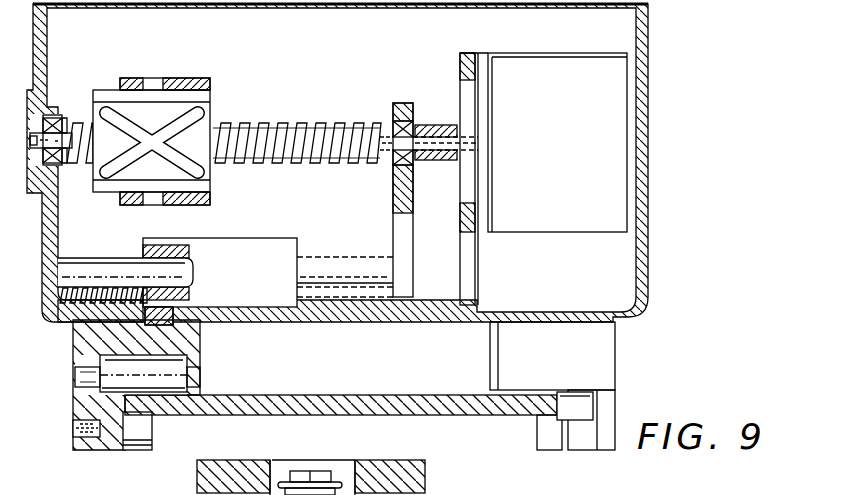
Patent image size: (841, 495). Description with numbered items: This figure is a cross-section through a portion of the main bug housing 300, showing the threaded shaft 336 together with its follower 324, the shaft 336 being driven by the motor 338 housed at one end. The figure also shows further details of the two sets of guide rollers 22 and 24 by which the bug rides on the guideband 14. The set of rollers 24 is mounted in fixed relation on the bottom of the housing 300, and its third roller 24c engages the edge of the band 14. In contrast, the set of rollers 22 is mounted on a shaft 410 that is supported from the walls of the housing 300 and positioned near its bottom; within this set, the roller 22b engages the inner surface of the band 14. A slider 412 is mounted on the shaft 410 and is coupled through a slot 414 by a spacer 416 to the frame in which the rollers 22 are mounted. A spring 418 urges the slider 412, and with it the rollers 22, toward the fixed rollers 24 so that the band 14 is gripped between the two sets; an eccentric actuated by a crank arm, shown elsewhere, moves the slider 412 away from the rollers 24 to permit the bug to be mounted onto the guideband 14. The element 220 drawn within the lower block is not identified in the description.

The housing 300 is at (647, 252).
The motor 338 is at (583, 119).
The follower 324 is at (202, 172).
The threaded shaft 336 is at (300, 162).
The spring 418 is at (118, 289).
The slider 412 is at (230, 255).
The shaft 410 is at (370, 237).
The spacer 416 is at (163, 308).
The slot 414 is at (103, 322).
The guide rollers 22 is at (78, 397).
The drive cylinder 220 is at (167, 372).
The roller 22b is at (137, 432).
The guideband 14 is at (435, 403).
The guide rollers 24 is at (597, 365).
The roller 24c is at (577, 408).